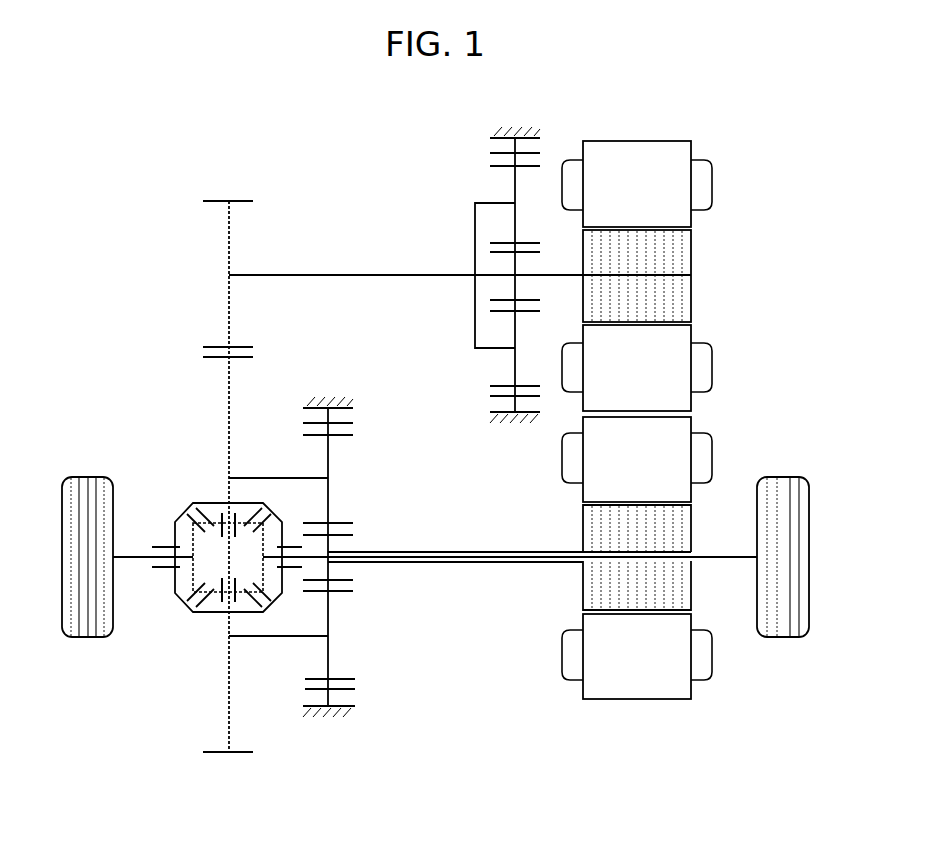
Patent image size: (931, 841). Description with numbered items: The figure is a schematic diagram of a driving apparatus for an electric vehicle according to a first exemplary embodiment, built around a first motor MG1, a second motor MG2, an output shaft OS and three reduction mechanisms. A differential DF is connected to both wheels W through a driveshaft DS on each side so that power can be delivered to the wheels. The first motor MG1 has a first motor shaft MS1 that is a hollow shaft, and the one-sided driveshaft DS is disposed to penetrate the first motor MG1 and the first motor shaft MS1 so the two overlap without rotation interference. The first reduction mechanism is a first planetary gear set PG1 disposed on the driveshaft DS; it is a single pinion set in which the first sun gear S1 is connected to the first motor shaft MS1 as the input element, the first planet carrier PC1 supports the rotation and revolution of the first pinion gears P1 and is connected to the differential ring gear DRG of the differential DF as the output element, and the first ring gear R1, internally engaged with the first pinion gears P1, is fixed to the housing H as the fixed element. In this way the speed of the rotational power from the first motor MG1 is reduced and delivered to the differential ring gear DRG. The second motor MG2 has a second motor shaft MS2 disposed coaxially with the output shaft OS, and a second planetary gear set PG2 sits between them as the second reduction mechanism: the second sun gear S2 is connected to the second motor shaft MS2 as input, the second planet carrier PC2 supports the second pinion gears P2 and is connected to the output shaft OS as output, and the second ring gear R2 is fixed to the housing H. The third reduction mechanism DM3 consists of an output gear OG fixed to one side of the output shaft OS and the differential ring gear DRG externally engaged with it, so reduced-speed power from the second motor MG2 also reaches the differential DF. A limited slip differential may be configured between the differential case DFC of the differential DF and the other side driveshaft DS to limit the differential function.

The output shaft OS is at (342, 277).
The third reduction mechanism DM3 is at (122, 322).
The output gear OG is at (215, 347).
The differential ring gear DRG is at (215, 357).
The second planetary gear set PG2 is at (508, 252).
The second ring gear R2 is at (537, 152).
The second planet carrier PC2 is at (475, 222).
The second pinion gear P2 is at (517, 222).
The second sun gear S2 is at (528, 298).
The housing H is at (516, 131).
The second motor MG2 is at (723, 180).
The second motor shaft MS2 is at (562, 275).
The first motor MG1 is at (725, 446).
The first motor shaft MS1 is at (443, 551).
The driveshaft DS is at (128, 559).
The wheel W is at (88, 638).
The differential DF is at (227, 567).
The differential case DFC is at (185, 508).
The first planetary gear set PG1 is at (339, 596).
The first planet carrier PC1 is at (252, 640).
The first pinion gear P1 is at (332, 648).
The first sun gear S1 is at (346, 581).
The first ring gear R1 is at (307, 692).